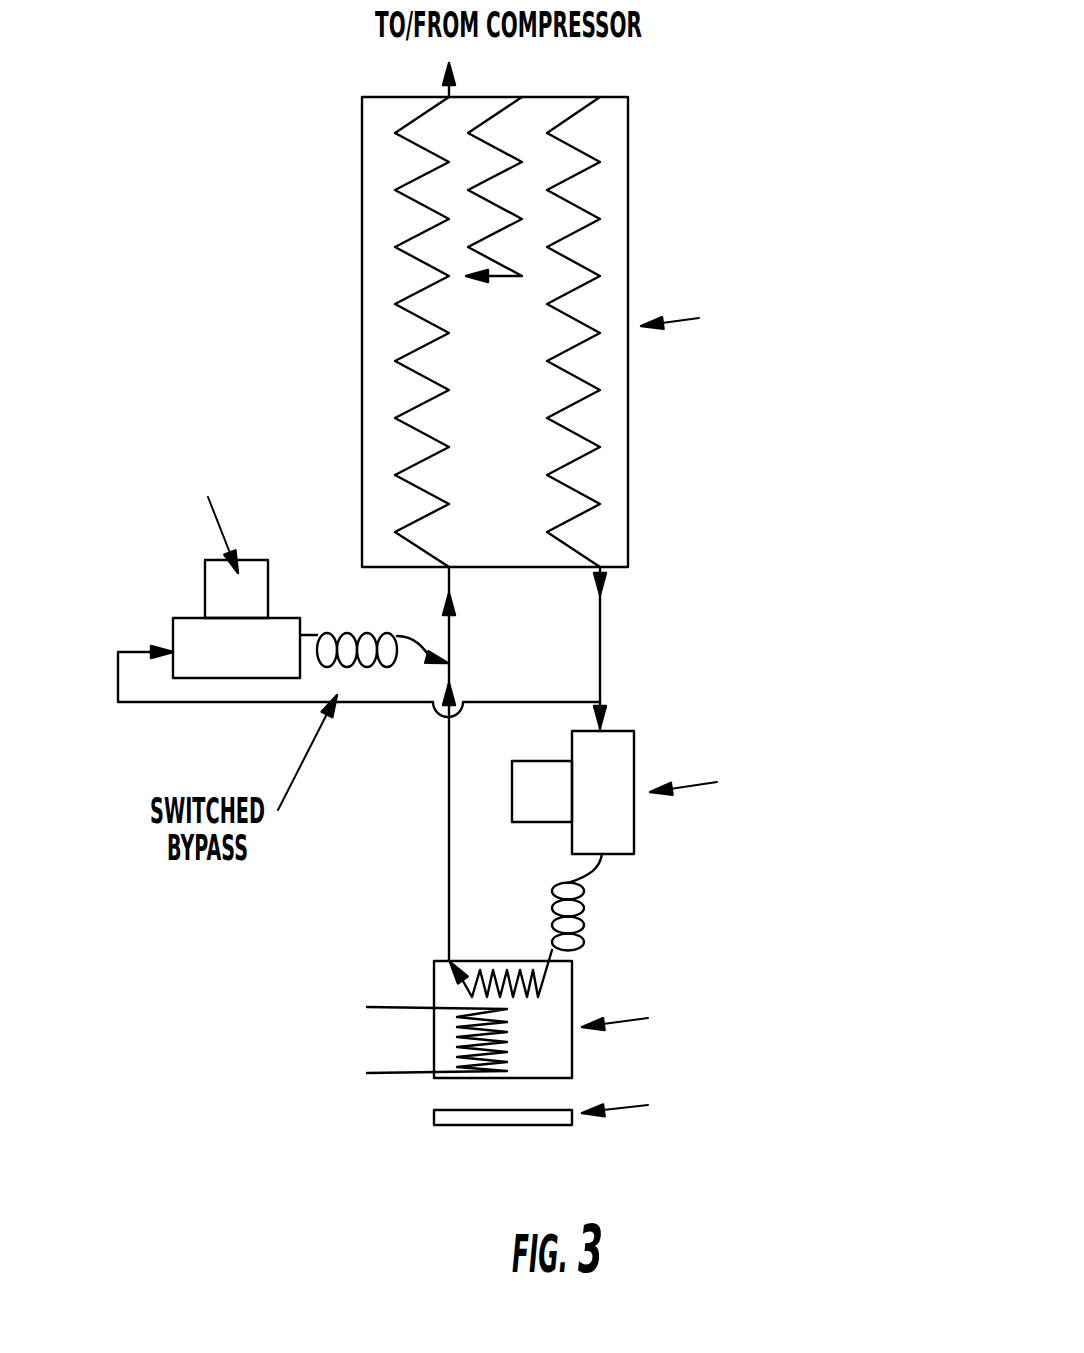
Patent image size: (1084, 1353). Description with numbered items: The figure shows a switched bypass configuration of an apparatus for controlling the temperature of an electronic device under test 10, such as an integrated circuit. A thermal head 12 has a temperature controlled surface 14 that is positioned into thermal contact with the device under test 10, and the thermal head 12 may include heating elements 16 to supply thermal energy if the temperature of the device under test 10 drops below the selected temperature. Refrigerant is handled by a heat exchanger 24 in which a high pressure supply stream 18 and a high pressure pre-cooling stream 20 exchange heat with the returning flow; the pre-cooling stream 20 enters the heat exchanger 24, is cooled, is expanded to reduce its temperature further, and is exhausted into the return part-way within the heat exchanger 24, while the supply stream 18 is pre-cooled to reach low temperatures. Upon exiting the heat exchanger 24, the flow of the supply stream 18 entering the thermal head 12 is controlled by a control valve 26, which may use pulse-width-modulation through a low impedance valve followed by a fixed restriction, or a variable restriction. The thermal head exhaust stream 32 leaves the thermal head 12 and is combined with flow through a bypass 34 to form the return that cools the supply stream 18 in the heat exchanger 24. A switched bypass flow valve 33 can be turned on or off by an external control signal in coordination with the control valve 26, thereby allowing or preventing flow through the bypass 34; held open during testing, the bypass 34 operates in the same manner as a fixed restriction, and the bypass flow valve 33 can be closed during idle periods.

The electronic device under test 10 is at (433, 1117).
The thermal head 12 is at (573, 990).
The temperature controlled surface 14 is at (493, 1080).
The heating elements 16 is at (416, 1026).
The high pressure supply stream 18 is at (600, 97).
The high pressure pre-cooling stream 20 is at (522, 97).
The heat exchanger 24 is at (628, 238).
The control valve 26 is at (634, 762).
The thermal head exhaust stream 32 is at (449, 892).
The switched bypass flow valve 33 is at (175, 618).
The bypass 34 is at (353, 633).